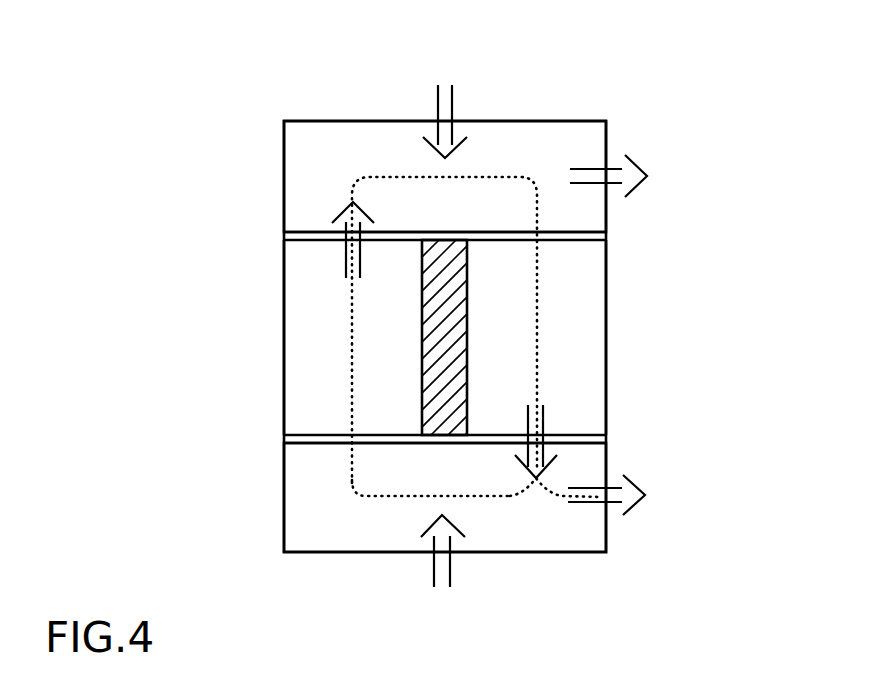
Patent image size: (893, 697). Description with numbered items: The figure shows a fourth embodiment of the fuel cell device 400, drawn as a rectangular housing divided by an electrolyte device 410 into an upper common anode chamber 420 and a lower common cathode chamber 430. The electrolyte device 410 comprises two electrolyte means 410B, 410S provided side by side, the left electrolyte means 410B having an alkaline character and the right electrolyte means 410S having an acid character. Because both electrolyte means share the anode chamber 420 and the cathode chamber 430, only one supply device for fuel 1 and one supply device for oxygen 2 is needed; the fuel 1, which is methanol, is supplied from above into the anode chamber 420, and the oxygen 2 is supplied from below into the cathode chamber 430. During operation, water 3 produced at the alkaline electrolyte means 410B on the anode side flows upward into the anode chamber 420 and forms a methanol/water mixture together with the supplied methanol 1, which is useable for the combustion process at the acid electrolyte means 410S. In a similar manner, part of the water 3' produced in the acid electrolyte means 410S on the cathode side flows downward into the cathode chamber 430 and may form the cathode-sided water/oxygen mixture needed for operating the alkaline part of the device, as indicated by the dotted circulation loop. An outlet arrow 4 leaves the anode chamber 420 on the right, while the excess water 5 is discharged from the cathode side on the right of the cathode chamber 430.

The fuel cell device 400 is at (284, 64).
The electrolyte device 410 is at (735, 237).
The alkaline electrolyte means 410B is at (270, 344).
The acid electrolyte means 410S is at (620, 343).
The anode chamber 420 is at (270, 170).
The cathode chamber 430 is at (270, 519).
The fuel 1 is at (445, 104).
The oxygen 2 is at (443, 568).
The water 3 is at (423, 336).
The water 3' is at (544, 451).
The first exhaust flow 4 is at (620, 176).
The excess water 5 is at (619, 495).